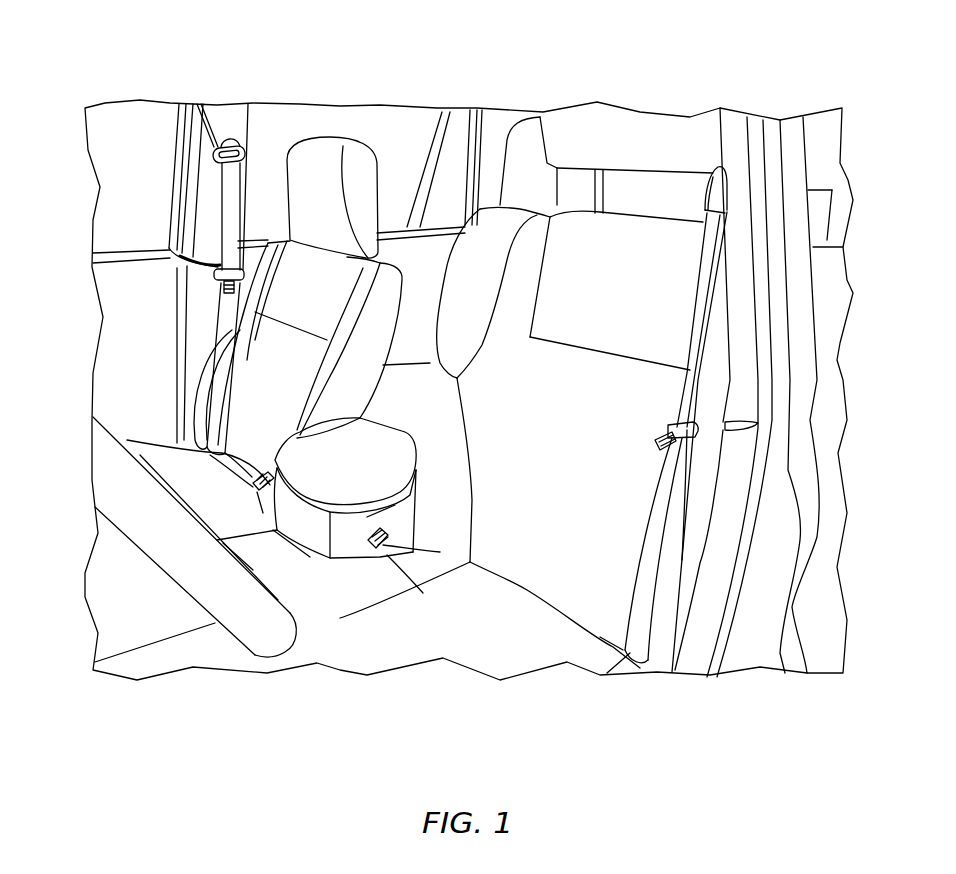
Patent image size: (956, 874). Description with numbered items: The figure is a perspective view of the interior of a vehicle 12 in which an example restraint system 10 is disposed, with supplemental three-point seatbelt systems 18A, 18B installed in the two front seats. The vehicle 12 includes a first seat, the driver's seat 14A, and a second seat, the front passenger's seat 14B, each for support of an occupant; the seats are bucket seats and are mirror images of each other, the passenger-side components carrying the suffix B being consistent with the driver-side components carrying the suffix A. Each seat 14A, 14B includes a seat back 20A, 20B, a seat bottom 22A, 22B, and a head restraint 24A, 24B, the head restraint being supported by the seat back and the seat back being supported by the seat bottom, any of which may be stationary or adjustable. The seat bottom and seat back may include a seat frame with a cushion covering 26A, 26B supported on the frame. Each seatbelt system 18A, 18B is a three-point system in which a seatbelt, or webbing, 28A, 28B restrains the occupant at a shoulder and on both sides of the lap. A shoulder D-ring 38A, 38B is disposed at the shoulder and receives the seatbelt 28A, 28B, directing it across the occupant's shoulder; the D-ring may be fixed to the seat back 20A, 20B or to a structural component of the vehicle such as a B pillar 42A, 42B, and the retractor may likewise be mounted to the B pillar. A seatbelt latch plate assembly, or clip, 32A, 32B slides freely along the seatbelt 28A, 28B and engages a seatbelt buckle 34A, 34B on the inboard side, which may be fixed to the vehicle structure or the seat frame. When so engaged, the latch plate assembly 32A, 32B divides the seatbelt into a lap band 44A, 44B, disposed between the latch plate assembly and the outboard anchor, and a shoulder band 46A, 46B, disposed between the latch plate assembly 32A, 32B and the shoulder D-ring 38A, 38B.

The restraint system 10 is at (118, 141).
The vehicle 12 is at (498, 60).
The first seat 14A is at (587, 660).
The second seat 14B is at (326, 131).
The seatbelt system 18A is at (641, 470).
The seatbelt system 18B is at (167, 207).
The seat back 20A is at (490, 338).
The seat back 20B is at (357, 383).
The seat bottom 22A is at (407, 653).
The seat bottom 22B is at (147, 440).
The head restraint 24A is at (608, 123).
The head restraint 24B is at (375, 167).
The cushion covering 26A is at (533, 530).
The cushion covering 26B is at (267, 400).
The seatbelt 28A is at (685, 339).
The seatbelt 28B is at (244, 321).
The seatbelt latch plate assembly 32A is at (655, 444).
The seatbelt latch plate assembly 32B is at (215, 273).
The seatbelt buckle 34A is at (387, 548).
The seatbelt buckle 34B is at (253, 492).
The shoulder D-ring 38A is at (703, 188).
The shoulder D-ring 38B is at (208, 153).
The B pillar 42A is at (718, 130).
The B pillar 42B is at (180, 153).
The lap band 44A is at (648, 587).
The lap band 44B is at (207, 383).
The shoulder band 46A is at (693, 298).
The shoulder band 46B is at (242, 203).